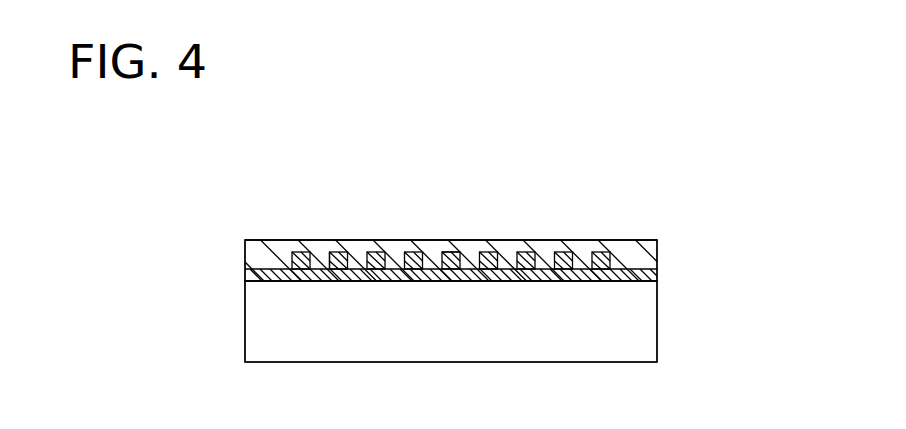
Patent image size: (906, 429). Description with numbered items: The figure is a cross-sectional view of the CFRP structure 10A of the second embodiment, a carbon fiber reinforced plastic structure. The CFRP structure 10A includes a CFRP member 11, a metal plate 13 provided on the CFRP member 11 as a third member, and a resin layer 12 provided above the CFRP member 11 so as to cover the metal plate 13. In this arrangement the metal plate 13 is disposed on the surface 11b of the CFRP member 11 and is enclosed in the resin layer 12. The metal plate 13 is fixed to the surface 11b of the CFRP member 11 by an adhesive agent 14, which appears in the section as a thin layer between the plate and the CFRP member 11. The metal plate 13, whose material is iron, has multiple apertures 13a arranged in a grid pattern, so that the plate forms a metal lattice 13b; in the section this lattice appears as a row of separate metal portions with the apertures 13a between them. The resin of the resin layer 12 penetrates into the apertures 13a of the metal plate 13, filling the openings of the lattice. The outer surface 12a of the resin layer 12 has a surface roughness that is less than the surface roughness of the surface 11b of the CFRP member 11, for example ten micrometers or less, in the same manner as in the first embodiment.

The CFRP structure 10A is at (645, 141).
The CFRP member 11 is at (657, 310).
The surface of the CFRP member 11b is at (275, 273).
The resin layer 12 is at (630, 250).
The surface of the resin layer 12a is at (293, 239).
The metal plate 13 is at (546, 247).
The apertures 13a is at (430, 256).
The metal lattice 13b is at (322, 266).
The adhesive agent 14 is at (623, 273).